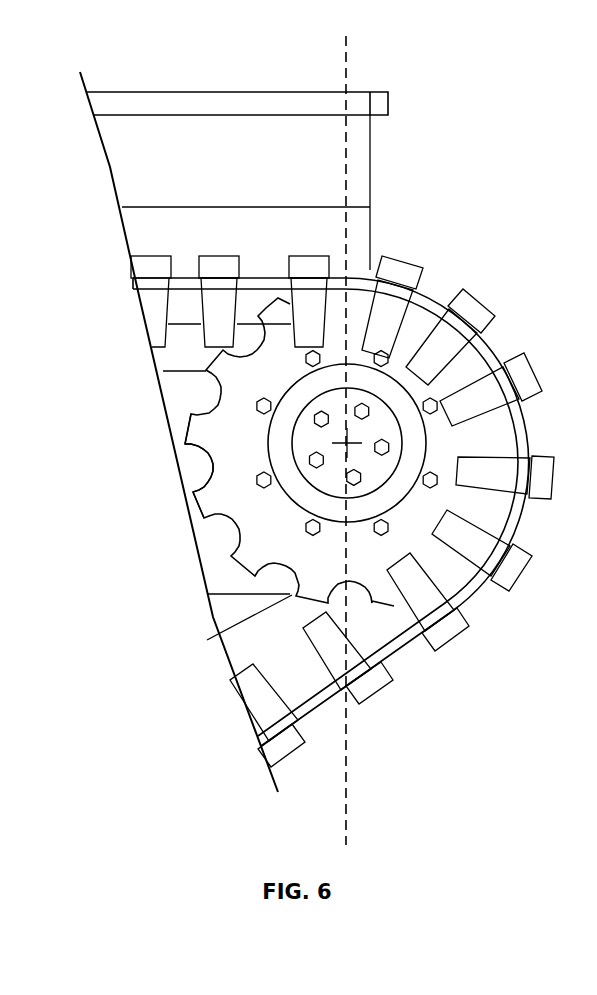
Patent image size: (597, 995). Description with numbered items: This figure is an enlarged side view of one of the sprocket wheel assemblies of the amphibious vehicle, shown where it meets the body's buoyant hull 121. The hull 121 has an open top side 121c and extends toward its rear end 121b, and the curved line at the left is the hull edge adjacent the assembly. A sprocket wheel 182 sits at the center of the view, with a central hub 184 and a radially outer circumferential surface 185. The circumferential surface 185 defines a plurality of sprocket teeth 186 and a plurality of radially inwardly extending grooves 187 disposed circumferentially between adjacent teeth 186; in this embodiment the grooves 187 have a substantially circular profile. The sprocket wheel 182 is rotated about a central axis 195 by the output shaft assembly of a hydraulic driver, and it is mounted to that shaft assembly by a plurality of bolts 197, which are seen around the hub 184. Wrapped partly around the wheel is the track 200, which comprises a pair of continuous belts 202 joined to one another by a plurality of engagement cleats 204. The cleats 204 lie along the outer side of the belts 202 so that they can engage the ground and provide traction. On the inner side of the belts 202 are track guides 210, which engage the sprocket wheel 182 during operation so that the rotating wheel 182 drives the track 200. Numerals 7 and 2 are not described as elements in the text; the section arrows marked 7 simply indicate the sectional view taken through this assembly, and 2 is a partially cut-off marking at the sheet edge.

The section line 7- 7 is at (346, 36).
The buoyant hull 121 is at (452, 89).
The rear end 121b is at (436, 184).
The open top side 121c is at (121, 89).
The partial reference (cut off) 2 is at (591, 243).
The sprocket wheel 182 is at (211, 398).
The central hub 184 is at (387, 480).
The radially outer circumferential surface 185 is at (219, 566).
The sprocket teeth 186 is at (184, 426).
The radially inwardly extending grooves 187 is at (212, 468).
The central axis 195 is at (347, 443).
The bolts 197 is at (385, 448).
The track 200 is at (439, 295).
The belts 202 is at (520, 517).
The engagement cleats 204 is at (216, 256).
The track guides 210 is at (312, 640).